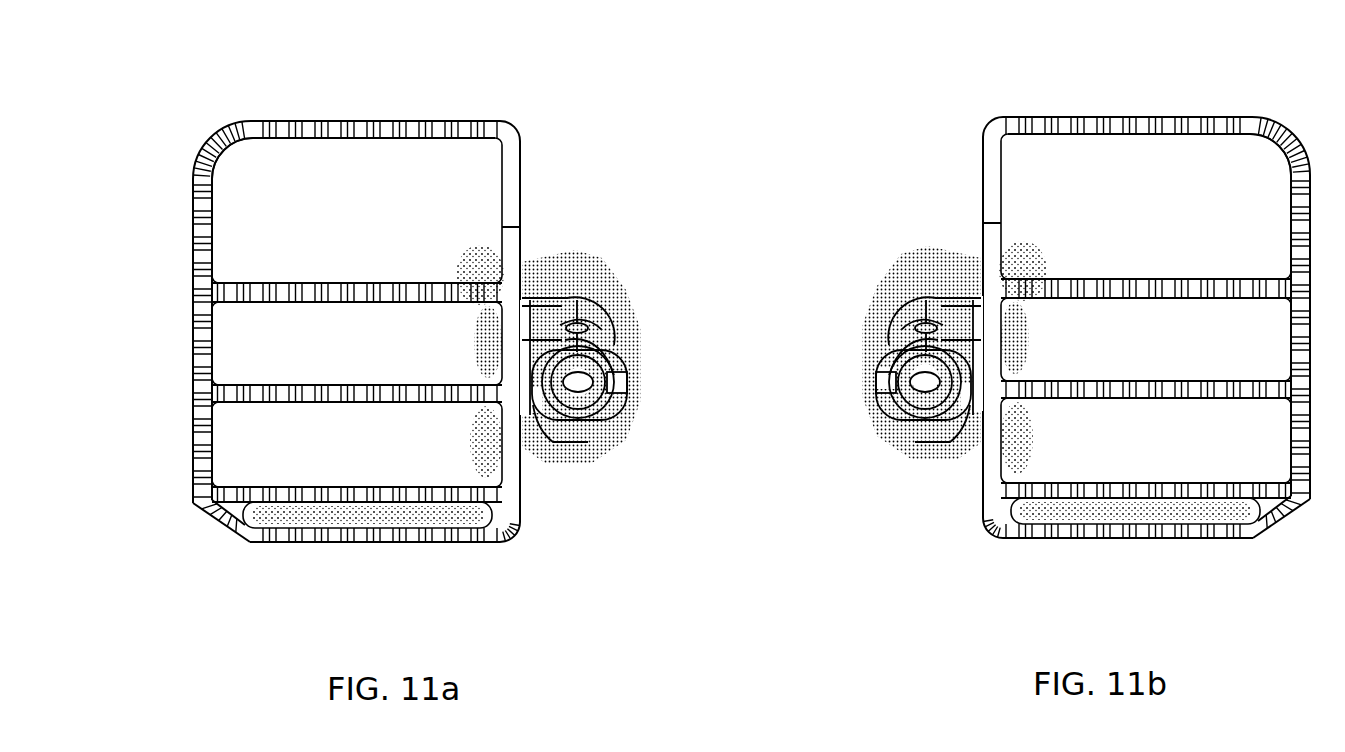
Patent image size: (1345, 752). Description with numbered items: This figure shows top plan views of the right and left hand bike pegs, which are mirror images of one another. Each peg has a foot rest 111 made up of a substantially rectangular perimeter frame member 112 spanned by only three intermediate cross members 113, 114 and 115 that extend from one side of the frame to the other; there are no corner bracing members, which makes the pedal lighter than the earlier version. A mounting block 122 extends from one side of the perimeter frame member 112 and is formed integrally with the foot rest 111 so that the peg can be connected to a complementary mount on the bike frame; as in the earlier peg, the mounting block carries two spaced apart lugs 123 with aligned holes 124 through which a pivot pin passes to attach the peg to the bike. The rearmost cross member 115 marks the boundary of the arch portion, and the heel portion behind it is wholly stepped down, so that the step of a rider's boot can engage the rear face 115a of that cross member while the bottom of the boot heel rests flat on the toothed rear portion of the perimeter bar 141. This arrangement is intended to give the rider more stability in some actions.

In FIG. 11A, the foot rest 111 is at (201, 503).
In FIG. 11B, the foot rest 111 is at (980, 512).
In FIG. 11A, the perimeter frame member 112 is at (420, 530).
In FIG. 11B, the perimeter frame member 112 is at (1058, 538).
In FIG. 11A, the intermediate cross member 113 is at (443, 493).
In FIG. 11B, the intermediate cross member 113 is at (983, 482).
In FIG. 11A, the intermediate cross member 114 is at (577, 297).
In FIG. 11B, the intermediate cross member 114 is at (1012, 405).
In FIG. 11A, the rearmost cross member 115 is at (457, 283).
In FIG. 11B, the rearmost cross member 115 is at (1000, 279).
In FIG. 11A, the rear face 115a is at (339, 285).
In FIG. 11B, the rear face 115a is at (1120, 276).
In FIG. 11A, the mounting block 122 is at (605, 405).
In FIG. 11B, the mounting block 122 is at (925, 425).
In FIG. 11A, the lug 123 is at (620, 383).
In FIG. 11B, the lug 123 is at (880, 377).
In FIG. 11A, the hole 124 is at (630, 345).
In FIG. 11B, the hole 124 is at (915, 305).
In FIG. 11A, the perimeter bar 141 is at (378, 120).
In FIG. 11B, the perimeter bar 141 is at (1133, 117).